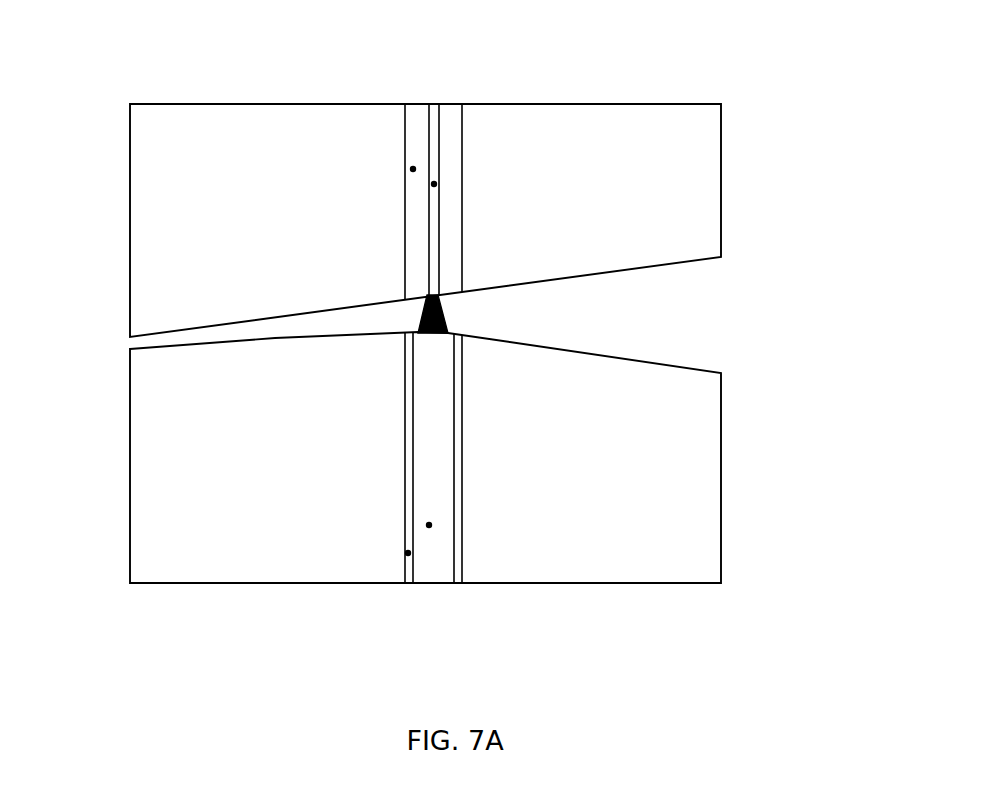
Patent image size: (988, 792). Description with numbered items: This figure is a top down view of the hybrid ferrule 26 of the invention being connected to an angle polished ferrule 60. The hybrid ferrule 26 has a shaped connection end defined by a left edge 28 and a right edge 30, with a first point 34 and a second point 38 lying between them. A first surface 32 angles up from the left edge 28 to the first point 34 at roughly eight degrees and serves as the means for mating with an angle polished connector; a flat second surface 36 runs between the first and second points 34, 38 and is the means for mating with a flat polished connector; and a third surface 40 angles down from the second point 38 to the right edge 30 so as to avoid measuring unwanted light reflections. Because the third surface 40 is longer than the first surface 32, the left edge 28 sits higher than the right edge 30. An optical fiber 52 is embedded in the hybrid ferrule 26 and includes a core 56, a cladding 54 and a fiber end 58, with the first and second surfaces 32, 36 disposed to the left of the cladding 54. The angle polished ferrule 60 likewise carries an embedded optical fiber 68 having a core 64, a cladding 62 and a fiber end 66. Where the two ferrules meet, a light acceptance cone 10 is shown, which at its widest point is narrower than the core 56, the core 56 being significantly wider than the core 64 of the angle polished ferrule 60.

The light acceptance cone 10 is at (448, 320).
The hybrid ferrule 26 is at (207, 563).
The left edge 28 is at (128, 348).
The right edge 30 is at (721, 373).
The first surface 32 is at (209, 340).
The first point 34 is at (275, 338).
The second surface 36 is at (344, 331).
The second point 38 is at (400, 331).
The third surface 40 is at (582, 353).
The optical fiber 52 is at (405, 518).
The cladding 54 is at (408, 553).
The core 56 is at (429, 525).
The fiber end 58 is at (433, 335).
The angle polished ferrule 60 is at (576, 170).
The cladding 62 is at (413, 169).
The core 64 is at (434, 184).
The fiber end 66 is at (440, 295).
The optical fiber 68 is at (405, 237).